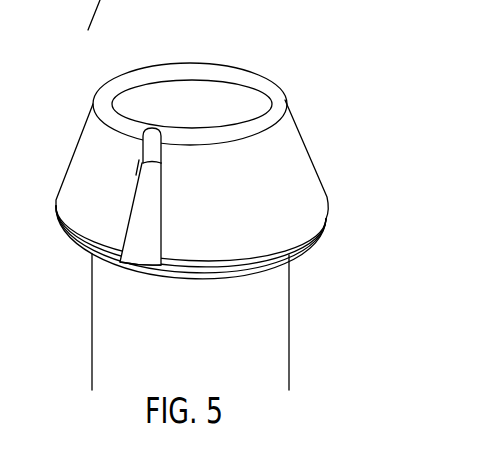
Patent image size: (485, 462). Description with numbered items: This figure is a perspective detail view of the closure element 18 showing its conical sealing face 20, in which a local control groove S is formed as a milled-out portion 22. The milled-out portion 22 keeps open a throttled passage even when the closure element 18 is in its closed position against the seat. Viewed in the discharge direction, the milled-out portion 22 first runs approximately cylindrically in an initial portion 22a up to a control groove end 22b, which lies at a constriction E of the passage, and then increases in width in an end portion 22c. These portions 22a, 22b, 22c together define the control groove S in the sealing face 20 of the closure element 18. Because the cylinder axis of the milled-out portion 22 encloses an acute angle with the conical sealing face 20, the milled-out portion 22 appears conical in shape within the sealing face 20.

The closure element 18 is at (290, 141).
The sealing face 20 is at (284, 180).
The milled-out portion 22 is at (168, 212).
The initial portion 22a is at (164, 133).
The control groove end 22b is at (160, 163).
The end portion 22c is at (150, 217).
The constriction E is at (137, 166).
The control groove S is at (142, 207).